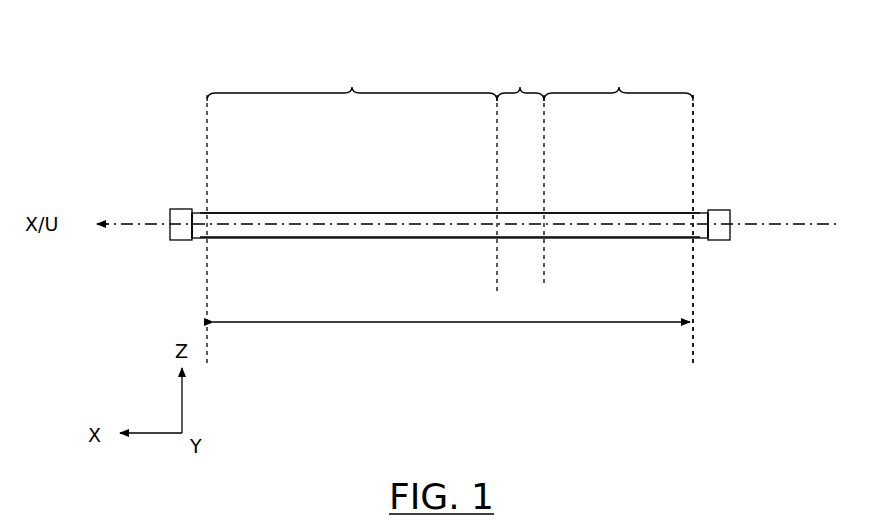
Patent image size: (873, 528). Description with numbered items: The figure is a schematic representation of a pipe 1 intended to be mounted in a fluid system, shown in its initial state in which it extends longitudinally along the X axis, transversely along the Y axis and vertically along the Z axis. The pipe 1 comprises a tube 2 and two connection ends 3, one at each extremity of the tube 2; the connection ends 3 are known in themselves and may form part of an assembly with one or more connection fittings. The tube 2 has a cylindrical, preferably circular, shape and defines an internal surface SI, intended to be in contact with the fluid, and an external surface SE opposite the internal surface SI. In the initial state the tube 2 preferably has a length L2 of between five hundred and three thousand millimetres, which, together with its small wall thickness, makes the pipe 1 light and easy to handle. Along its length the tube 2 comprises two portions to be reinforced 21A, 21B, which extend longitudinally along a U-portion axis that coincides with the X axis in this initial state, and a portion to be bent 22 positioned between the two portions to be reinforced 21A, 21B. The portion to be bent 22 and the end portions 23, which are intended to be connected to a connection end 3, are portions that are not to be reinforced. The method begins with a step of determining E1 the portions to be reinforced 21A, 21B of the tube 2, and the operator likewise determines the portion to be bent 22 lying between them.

The pipe 1 is at (115, 110).
The tube 2 is at (576, 212).
The connection end 3 is at (170, 214).
The portion to be reinforced 21A is at (352, 82).
The portion to be reinforced 21B is at (618, 82).
The portion to be bent 22 is at (520, 82).
The end portion 23 is at (192, 212).
The internal surface SI is at (355, 218).
The external surface SE is at (376, 211).
The length L2 is at (451, 338).
The step of determining E1 is at (770, 352).